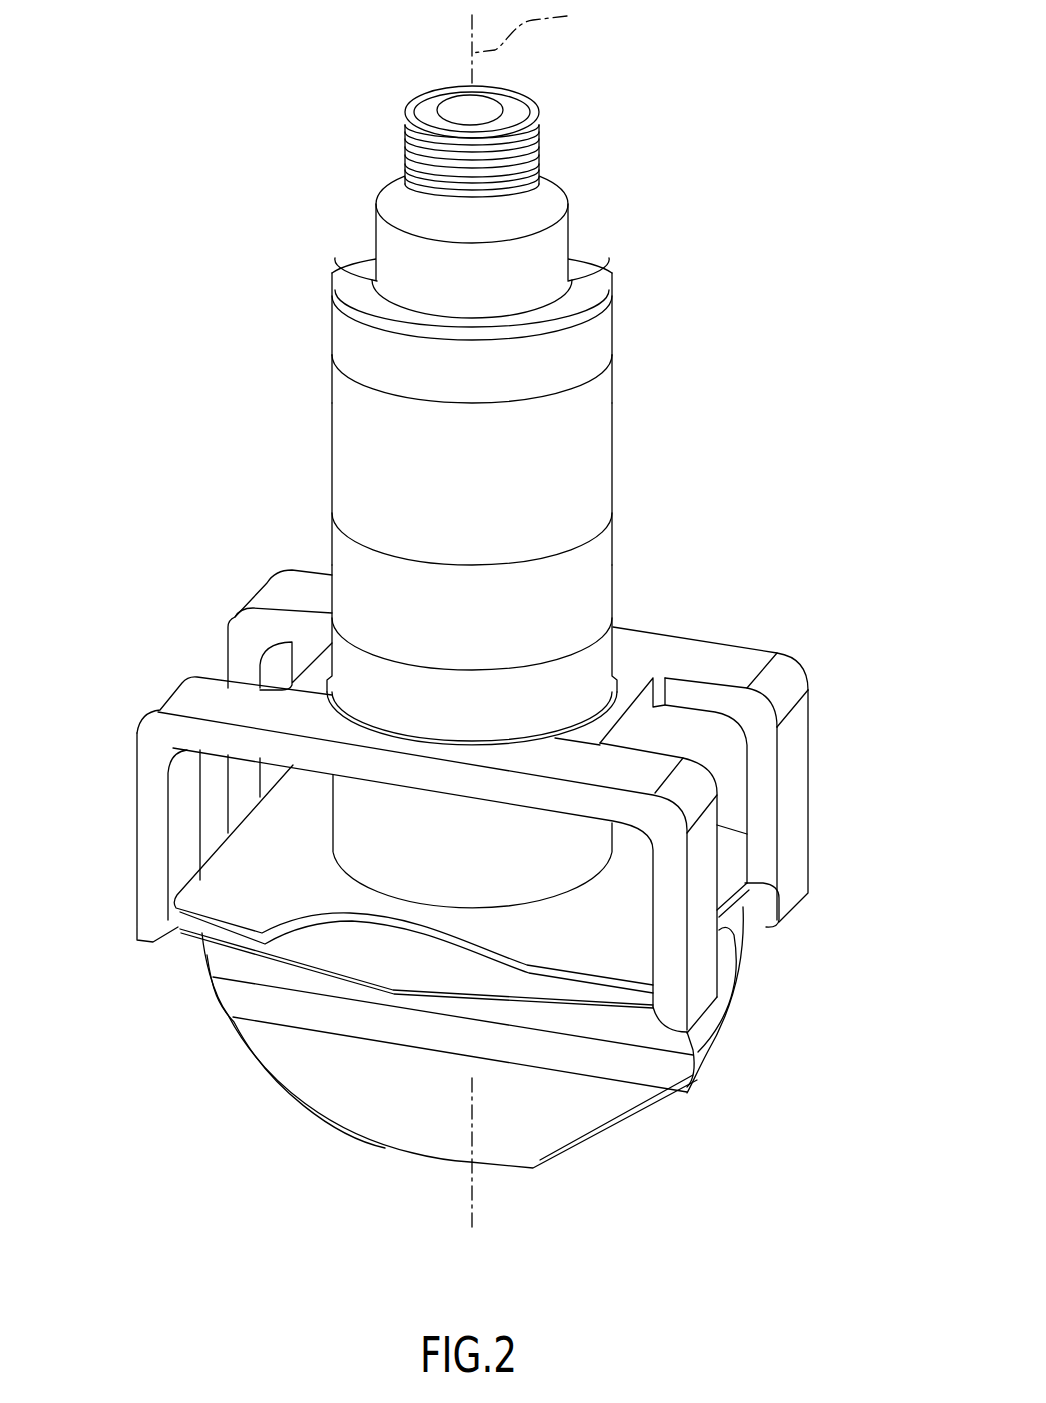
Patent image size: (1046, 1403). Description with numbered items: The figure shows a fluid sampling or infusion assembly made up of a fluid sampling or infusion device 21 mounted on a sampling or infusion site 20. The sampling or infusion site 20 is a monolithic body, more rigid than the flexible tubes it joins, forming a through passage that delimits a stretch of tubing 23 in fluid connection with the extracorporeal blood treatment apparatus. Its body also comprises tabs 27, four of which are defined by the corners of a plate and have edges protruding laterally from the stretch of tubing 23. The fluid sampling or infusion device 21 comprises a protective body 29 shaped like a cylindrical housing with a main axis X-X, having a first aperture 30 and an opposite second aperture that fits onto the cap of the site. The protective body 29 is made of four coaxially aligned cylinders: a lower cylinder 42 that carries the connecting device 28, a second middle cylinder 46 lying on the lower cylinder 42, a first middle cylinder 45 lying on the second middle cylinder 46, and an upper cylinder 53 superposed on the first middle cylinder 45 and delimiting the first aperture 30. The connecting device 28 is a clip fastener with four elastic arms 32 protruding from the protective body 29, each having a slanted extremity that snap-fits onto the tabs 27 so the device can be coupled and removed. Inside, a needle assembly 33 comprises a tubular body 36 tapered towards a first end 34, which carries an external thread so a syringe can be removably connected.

The sampling or infusion site 20 is at (578, 1152).
The fluid sampling or infusion device 21 is at (790, 366).
The stretch of tubing 23 is at (730, 993).
The tabs 27 is at (200, 928).
The connecting device 28 is at (813, 690).
The protective body 29 is at (617, 392).
The first aperture 30 is at (570, 236).
The elastic arms 32 is at (262, 590).
The needle assembly 33 is at (559, 153).
The first end 34 is at (410, 142).
The tubular body 36 is at (400, 240).
The lower cylinder 42 is at (583, 660).
The first middle cylinder 45 is at (577, 476).
The second middle cylinder 46 is at (598, 567).
The upper cylinder 53 is at (617, 303).